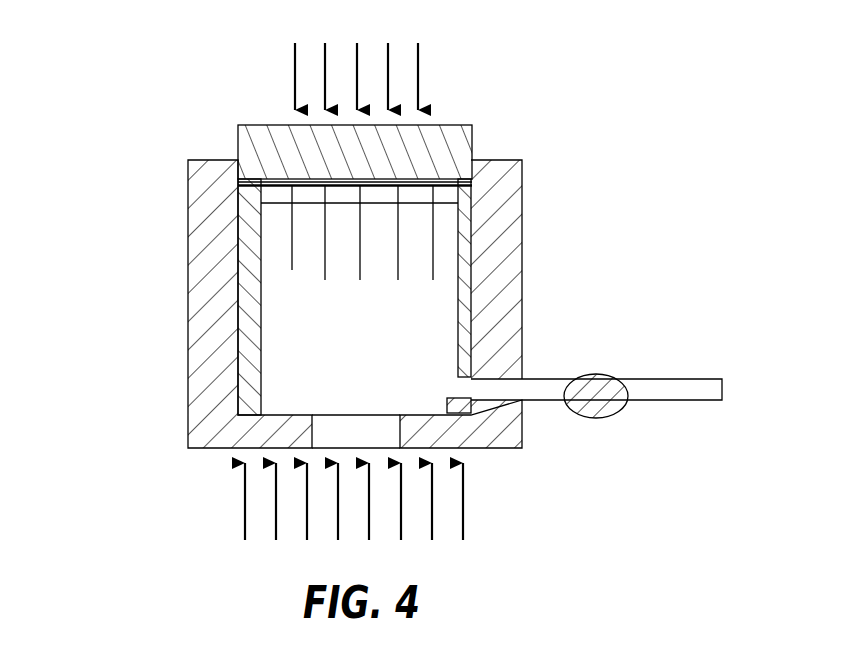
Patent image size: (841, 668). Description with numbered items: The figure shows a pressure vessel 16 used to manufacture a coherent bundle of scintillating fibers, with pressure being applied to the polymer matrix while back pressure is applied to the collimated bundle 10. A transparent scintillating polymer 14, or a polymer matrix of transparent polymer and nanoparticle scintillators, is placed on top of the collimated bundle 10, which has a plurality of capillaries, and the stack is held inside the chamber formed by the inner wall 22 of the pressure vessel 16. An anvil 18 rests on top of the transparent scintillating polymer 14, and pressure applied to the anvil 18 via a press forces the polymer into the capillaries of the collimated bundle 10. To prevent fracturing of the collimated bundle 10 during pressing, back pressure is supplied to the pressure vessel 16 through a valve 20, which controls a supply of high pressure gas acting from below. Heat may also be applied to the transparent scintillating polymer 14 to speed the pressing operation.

The collimated bundle 10 is at (245, 194).
The transparent scintillating polymer 14 is at (460, 178).
The pressure vessel 16 is at (188, 255).
The anvil 18 is at (238, 142).
The valve 20 is at (592, 376).
The inner wall 22 is at (245, 356).